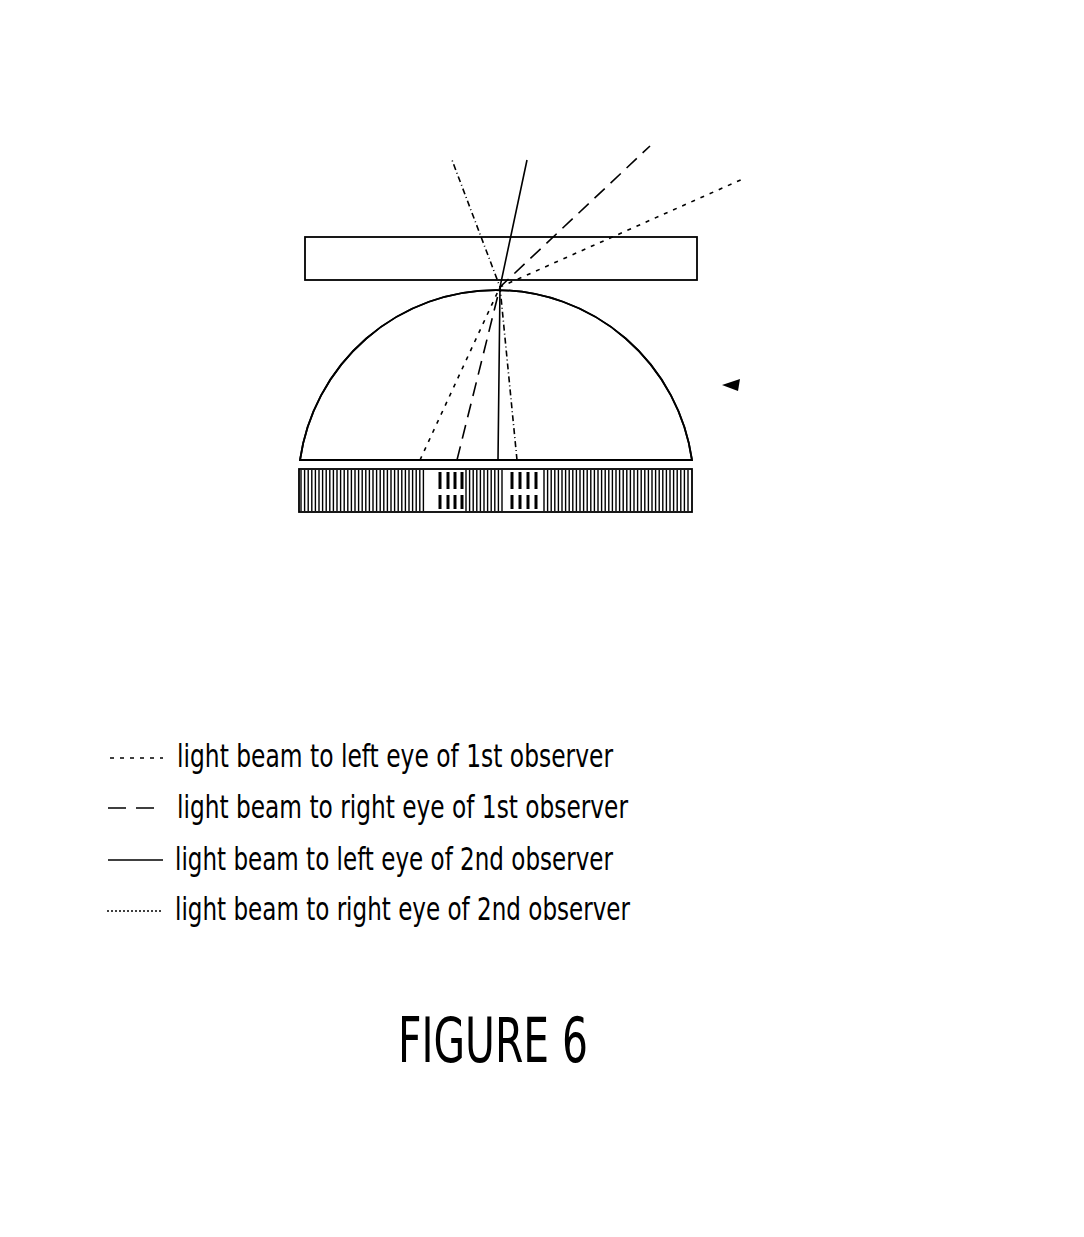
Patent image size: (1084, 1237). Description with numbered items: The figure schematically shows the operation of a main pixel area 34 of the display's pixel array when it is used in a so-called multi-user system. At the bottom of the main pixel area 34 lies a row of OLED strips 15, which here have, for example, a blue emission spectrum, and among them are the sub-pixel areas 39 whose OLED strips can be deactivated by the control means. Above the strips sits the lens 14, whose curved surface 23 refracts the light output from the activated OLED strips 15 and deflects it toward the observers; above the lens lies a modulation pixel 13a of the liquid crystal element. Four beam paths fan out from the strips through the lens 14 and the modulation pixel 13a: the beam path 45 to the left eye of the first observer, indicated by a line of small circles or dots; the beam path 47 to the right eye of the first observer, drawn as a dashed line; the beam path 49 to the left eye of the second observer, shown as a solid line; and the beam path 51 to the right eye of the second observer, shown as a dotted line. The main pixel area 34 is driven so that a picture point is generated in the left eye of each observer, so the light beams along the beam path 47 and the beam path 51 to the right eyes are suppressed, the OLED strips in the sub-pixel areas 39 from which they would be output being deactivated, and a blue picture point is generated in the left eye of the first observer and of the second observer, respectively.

The modulation pixel 13a is at (678, 260).
The lens 14 is at (337, 418).
The activated OLED strips 15 is at (298, 492).
The surface of the lens 23 is at (348, 355).
The main pixel area 34 is at (736, 384).
The sub-pixel areas 39 is at (448, 512).
The beam path to the left eye of the first observer 45 is at (725, 186).
The beam path to the right eye of the first observer 47 is at (645, 148).
The beam path to the left eye of the second observer 49 is at (527, 163).
The beam path to the right eye of the second observer 51 is at (452, 160).